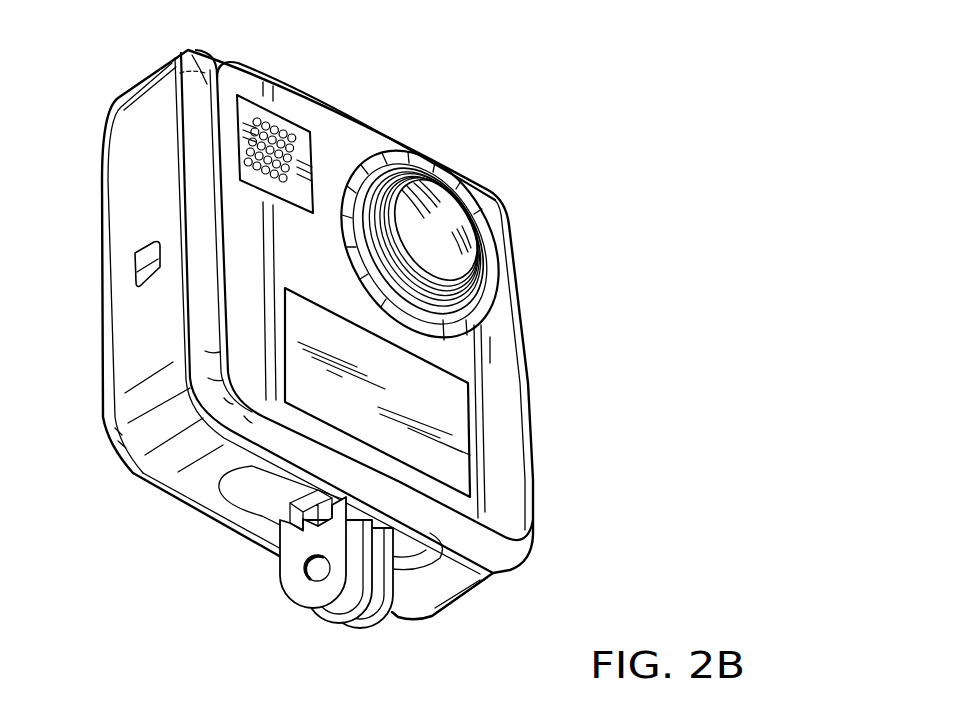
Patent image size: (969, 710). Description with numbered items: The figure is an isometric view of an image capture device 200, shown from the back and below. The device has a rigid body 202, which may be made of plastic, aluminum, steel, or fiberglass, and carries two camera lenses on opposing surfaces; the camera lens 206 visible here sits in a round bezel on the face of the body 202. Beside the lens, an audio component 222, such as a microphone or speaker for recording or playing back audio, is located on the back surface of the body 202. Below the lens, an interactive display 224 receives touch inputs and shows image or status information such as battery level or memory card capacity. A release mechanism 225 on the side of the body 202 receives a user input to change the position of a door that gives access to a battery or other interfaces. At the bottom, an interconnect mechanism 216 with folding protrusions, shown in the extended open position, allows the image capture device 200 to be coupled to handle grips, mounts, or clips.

The image capture device 200 is at (347, 326).
The body 202 is at (527, 357).
The camera lens 206 is at (450, 213).
The interconnect mechanism 216 is at (293, 558).
The audio component 222 is at (205, 80).
The interactive display 224 is at (422, 400).
The release mechanism 225 is at (147, 258).